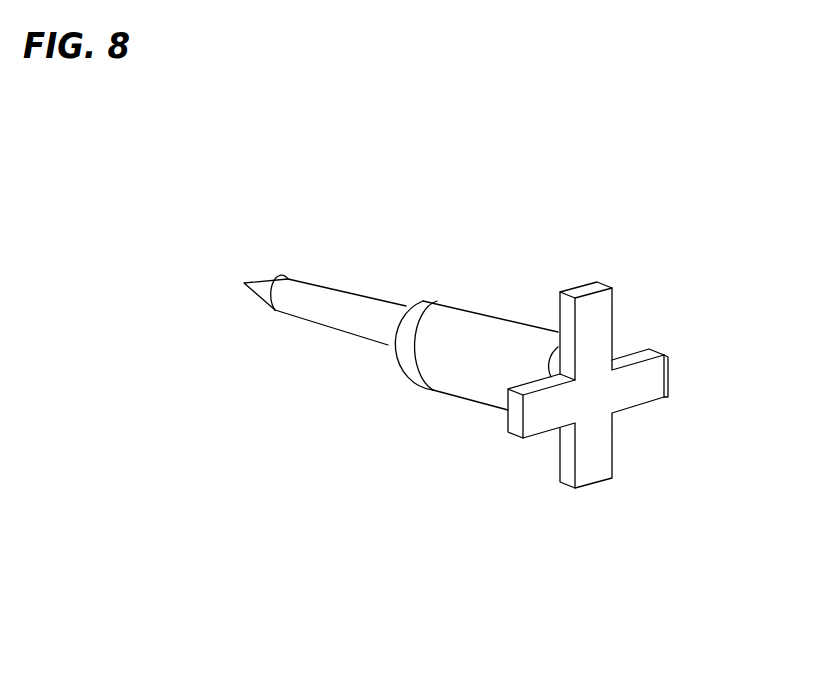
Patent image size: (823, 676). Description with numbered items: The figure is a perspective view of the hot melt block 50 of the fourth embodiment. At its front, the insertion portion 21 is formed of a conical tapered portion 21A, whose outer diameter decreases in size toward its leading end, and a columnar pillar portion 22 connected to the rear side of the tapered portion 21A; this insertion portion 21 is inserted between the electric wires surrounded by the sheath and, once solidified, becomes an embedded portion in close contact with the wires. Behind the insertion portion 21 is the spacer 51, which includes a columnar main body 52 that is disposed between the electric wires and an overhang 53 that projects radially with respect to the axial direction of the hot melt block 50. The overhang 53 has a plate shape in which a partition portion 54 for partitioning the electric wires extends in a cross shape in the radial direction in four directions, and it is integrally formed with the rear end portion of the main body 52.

The hot melt block 50 is at (542, 238).
The insertion portion 21 is at (232, 417).
The tapered portion 21A is at (256, 291).
The pillar portion 22 is at (332, 310).
The spacer 51 is at (393, 592).
The main body 52 is at (445, 357).
The overhang 53 is at (528, 496).
The partition portion 54 is at (595, 297).